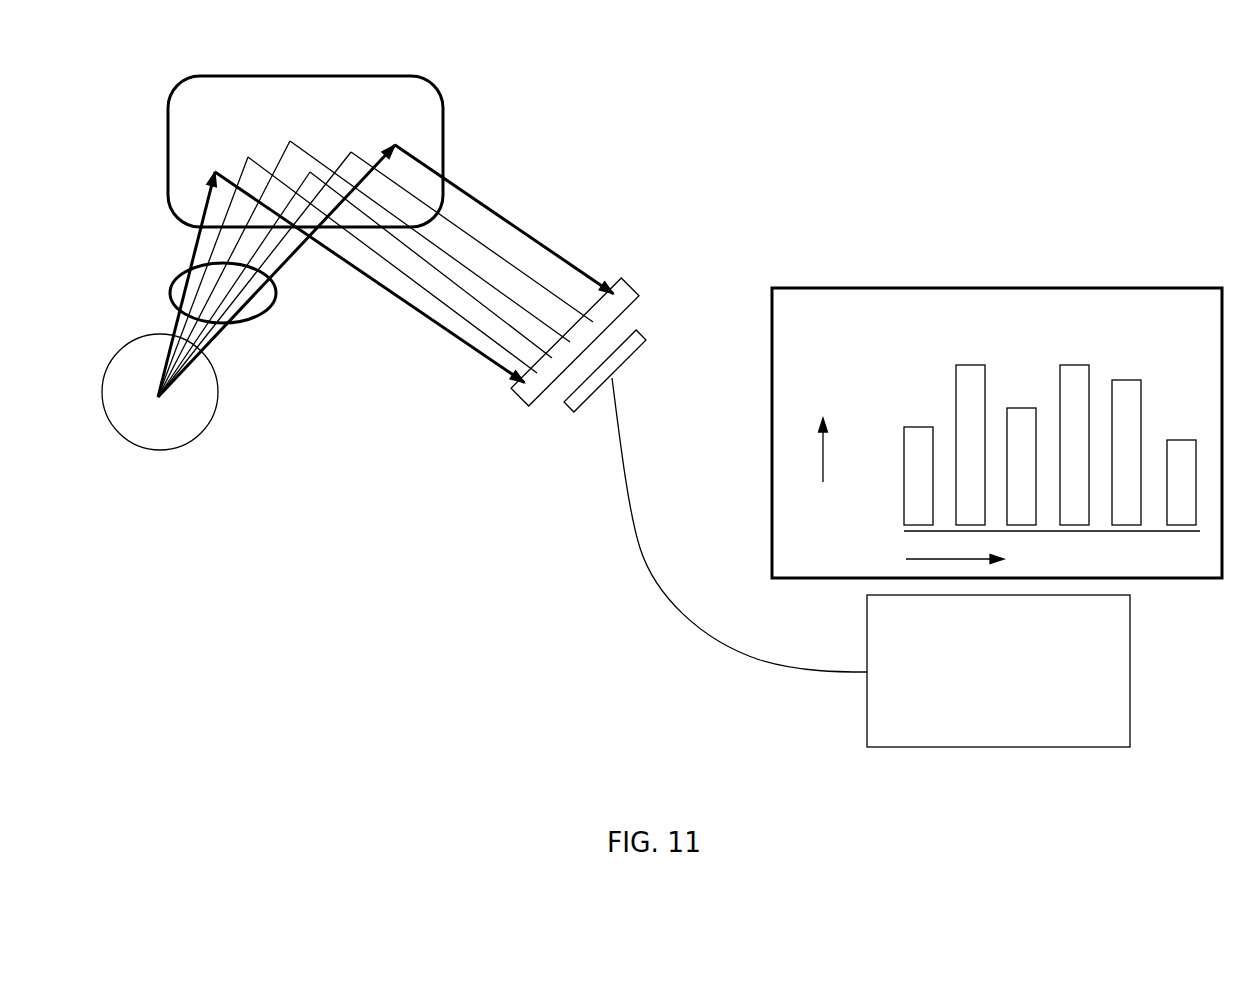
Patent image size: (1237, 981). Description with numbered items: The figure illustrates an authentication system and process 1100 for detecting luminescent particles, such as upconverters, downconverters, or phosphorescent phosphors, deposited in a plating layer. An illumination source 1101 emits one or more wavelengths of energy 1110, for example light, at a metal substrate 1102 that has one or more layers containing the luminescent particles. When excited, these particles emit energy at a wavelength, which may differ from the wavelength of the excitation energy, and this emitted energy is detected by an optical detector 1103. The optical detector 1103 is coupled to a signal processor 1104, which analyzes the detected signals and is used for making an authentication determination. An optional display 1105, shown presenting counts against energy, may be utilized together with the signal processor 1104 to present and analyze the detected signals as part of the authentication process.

The authentication system and process 1100 is at (952, 98).
The illumination source 1101 is at (203, 435).
The metal substrate 1102 is at (427, 117).
The optical detector 1103 is at (640, 290).
The signal processor 1104 is at (1018, 722).
The display 1105 is at (999, 287).
The wavelength(s) of energy 1110 is at (273, 310).